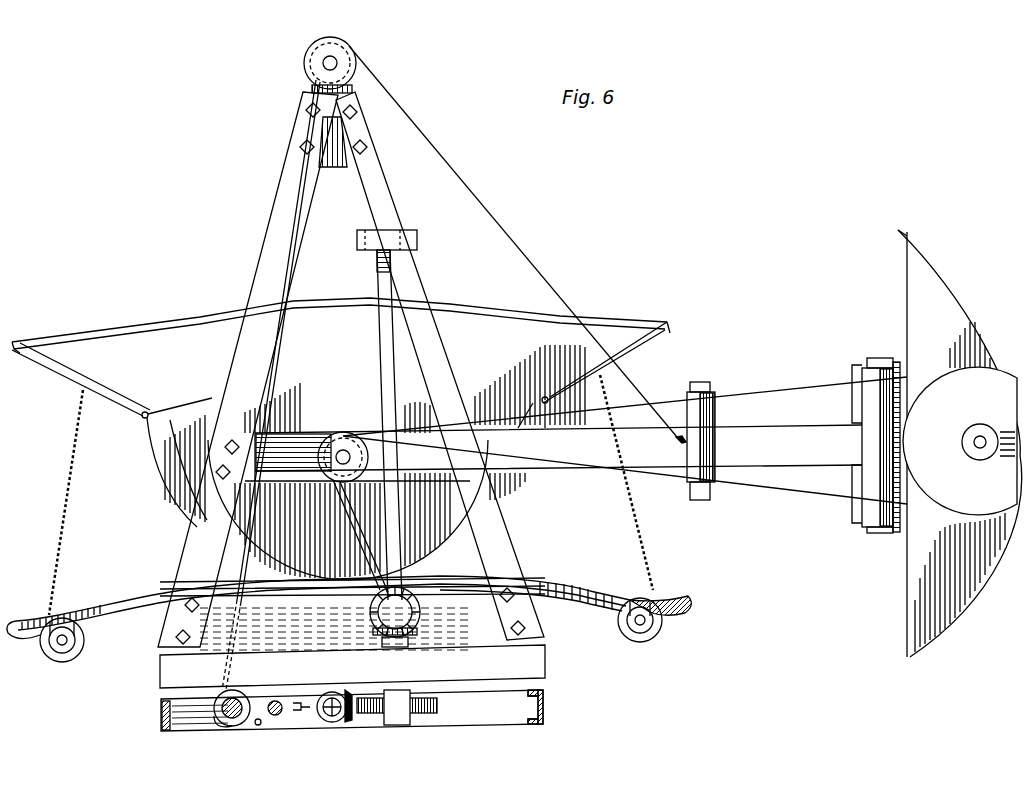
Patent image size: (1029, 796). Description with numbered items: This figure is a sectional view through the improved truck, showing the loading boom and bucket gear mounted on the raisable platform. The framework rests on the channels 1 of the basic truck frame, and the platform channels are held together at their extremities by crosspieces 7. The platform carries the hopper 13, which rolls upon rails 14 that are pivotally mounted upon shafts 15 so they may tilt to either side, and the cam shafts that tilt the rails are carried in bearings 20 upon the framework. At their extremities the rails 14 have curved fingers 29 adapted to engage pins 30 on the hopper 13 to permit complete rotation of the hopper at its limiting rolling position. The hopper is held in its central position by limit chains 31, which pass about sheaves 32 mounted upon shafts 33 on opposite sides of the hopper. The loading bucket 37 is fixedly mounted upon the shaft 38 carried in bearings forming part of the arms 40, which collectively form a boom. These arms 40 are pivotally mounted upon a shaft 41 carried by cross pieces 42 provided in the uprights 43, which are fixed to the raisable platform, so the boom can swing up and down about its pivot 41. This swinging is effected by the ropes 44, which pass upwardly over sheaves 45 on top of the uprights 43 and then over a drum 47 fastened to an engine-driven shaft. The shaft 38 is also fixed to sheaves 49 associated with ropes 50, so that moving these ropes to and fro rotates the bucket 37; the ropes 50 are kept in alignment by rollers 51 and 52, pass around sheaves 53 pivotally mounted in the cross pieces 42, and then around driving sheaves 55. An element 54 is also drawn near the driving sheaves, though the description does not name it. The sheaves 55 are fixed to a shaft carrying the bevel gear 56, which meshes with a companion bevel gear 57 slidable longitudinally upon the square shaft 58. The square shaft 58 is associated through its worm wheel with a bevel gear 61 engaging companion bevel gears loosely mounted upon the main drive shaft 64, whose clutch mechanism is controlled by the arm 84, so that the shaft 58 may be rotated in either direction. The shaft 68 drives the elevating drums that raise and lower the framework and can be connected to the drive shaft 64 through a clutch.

The channels 1 is at (543, 708).
The crosspieces 7 is at (538, 672).
The hopper 13 is at (212, 330).
The rails 14 is at (128, 612).
The shafts 15 is at (256, 726).
The bearings 20 is at (165, 626).
The curved fingers 29 is at (683, 608).
The pins 30 is at (143, 418).
The limit chains 31 is at (65, 556).
The sheaves 32 is at (52, 654).
The shafts 33 is at (66, 648).
The loading bucket 37 is at (920, 545).
The shaft 38 is at (980, 436).
The arms 40 is at (762, 447).
The shaft 41 is at (345, 450).
The cross pieces 42 is at (236, 703).
The uprights 43 is at (262, 280).
The ropes 44 is at (492, 226).
The sheaves 45 is at (345, 55).
The drum 47 is at (222, 722).
The sheaves 49 is at (997, 500).
The ropes 50 is at (796, 482).
The rollers 51 is at (714, 426).
The rollers 52 is at (872, 408).
The sheaves 53 is at (330, 440).
The threaded shaft 54 is at (396, 714).
The driving sheaves 55 is at (372, 618).
The bevel gear 56 is at (418, 614).
The companion bevel gear 57 is at (413, 632).
The square shaft 58 is at (380, 284).
The bevel gear 61 is at (350, 722).
The shaft 64 is at (331, 723).
The shaft 68 is at (275, 716).
The arm 84 is at (302, 703).